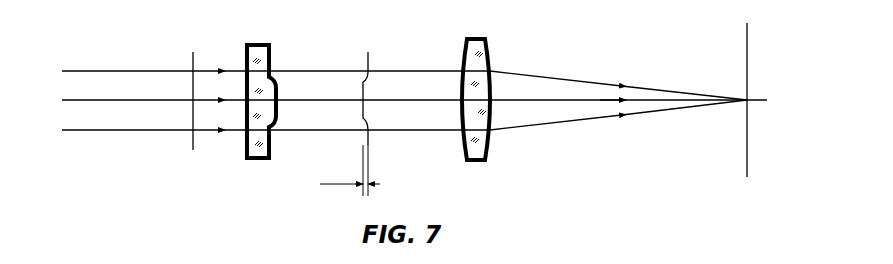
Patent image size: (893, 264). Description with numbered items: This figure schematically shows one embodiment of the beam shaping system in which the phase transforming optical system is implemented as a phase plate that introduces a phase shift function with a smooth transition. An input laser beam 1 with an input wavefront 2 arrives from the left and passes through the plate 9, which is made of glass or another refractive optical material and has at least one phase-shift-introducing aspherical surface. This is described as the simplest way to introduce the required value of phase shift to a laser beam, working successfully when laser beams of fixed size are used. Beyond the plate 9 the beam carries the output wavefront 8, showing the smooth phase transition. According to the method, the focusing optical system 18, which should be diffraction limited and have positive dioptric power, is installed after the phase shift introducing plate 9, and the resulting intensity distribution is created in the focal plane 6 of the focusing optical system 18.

The input laser beam 1 is at (127, 133).
The input wavefront 2 is at (193, 147).
The optical component with at least one aspherical optical surface 9 is at (253, 162).
The output wavefront 8 is at (368, 145).
The focusing optical system 18 is at (487, 145).
The focal plane 6 is at (747, 143).